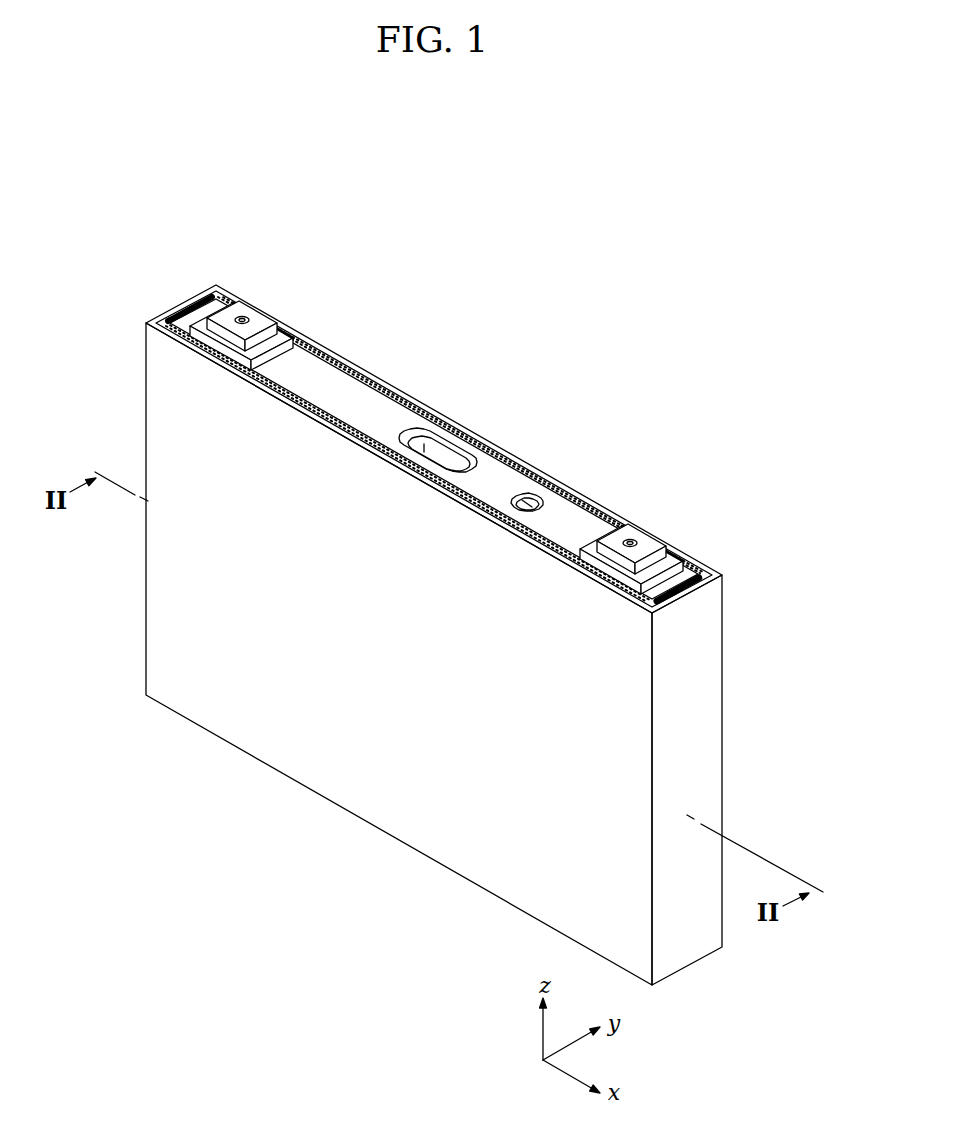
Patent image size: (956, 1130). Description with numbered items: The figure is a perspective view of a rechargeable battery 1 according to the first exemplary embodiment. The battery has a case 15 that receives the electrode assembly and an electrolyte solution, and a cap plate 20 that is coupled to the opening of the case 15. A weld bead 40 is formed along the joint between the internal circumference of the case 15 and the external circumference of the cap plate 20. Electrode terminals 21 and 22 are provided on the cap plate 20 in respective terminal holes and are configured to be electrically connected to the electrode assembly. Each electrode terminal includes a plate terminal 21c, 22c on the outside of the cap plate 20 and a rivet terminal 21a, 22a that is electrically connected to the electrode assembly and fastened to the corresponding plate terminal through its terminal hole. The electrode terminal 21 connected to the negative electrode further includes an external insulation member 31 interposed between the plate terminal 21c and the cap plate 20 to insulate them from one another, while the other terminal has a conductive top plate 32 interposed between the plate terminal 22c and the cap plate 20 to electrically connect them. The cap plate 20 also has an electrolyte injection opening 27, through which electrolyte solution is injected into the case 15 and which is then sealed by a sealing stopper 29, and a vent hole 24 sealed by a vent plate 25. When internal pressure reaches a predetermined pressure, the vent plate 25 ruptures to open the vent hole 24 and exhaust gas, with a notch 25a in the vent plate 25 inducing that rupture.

The rechargeable battery 1 is at (486, 286).
The case 15 is at (380, 790).
The cap plate 20 is at (320, 372).
The electrode terminal 21 is at (217, 299).
The rivet terminal 21a is at (243, 318).
The plate terminal 21c is at (264, 323).
The electrode terminal 22 is at (621, 514).
The rivet terminal 22a is at (630, 540).
The plate terminal 22c is at (650, 547).
The vent hole 24 is at (417, 430).
The vent plate 25 is at (439, 447).
The notch 25a is at (443, 460).
The electrolyte injection opening 27 is at (531, 498).
The sealing stopper 29 is at (525, 495).
The external insulation member 31 is at (187, 305).
The top plate 32 is at (673, 558).
The weld bead 40 is at (343, 430).